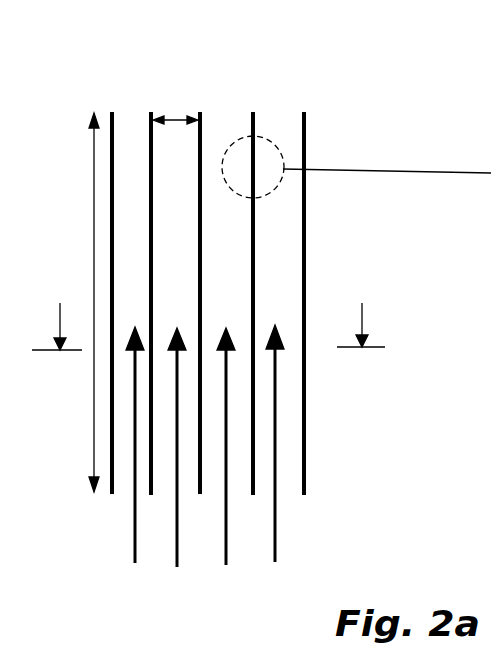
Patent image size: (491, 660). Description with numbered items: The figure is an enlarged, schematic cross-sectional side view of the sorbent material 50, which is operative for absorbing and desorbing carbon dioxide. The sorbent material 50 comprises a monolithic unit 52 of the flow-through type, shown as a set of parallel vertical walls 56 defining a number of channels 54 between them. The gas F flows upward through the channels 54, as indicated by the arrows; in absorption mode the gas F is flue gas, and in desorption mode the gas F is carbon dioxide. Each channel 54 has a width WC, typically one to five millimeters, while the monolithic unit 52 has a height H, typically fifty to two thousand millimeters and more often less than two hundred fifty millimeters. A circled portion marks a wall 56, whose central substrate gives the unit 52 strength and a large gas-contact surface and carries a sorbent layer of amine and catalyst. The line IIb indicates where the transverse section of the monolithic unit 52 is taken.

The sorbent material 50 is at (362, 92).
The monolithic unit 52 is at (305, 224).
The channels 54 is at (130, 118).
The wall 56 is at (254, 157).
The gas F is at (133, 547).
The height H is at (93, 194).
The width WC is at (175, 106).
The line IIb- IIb is at (216, 326).